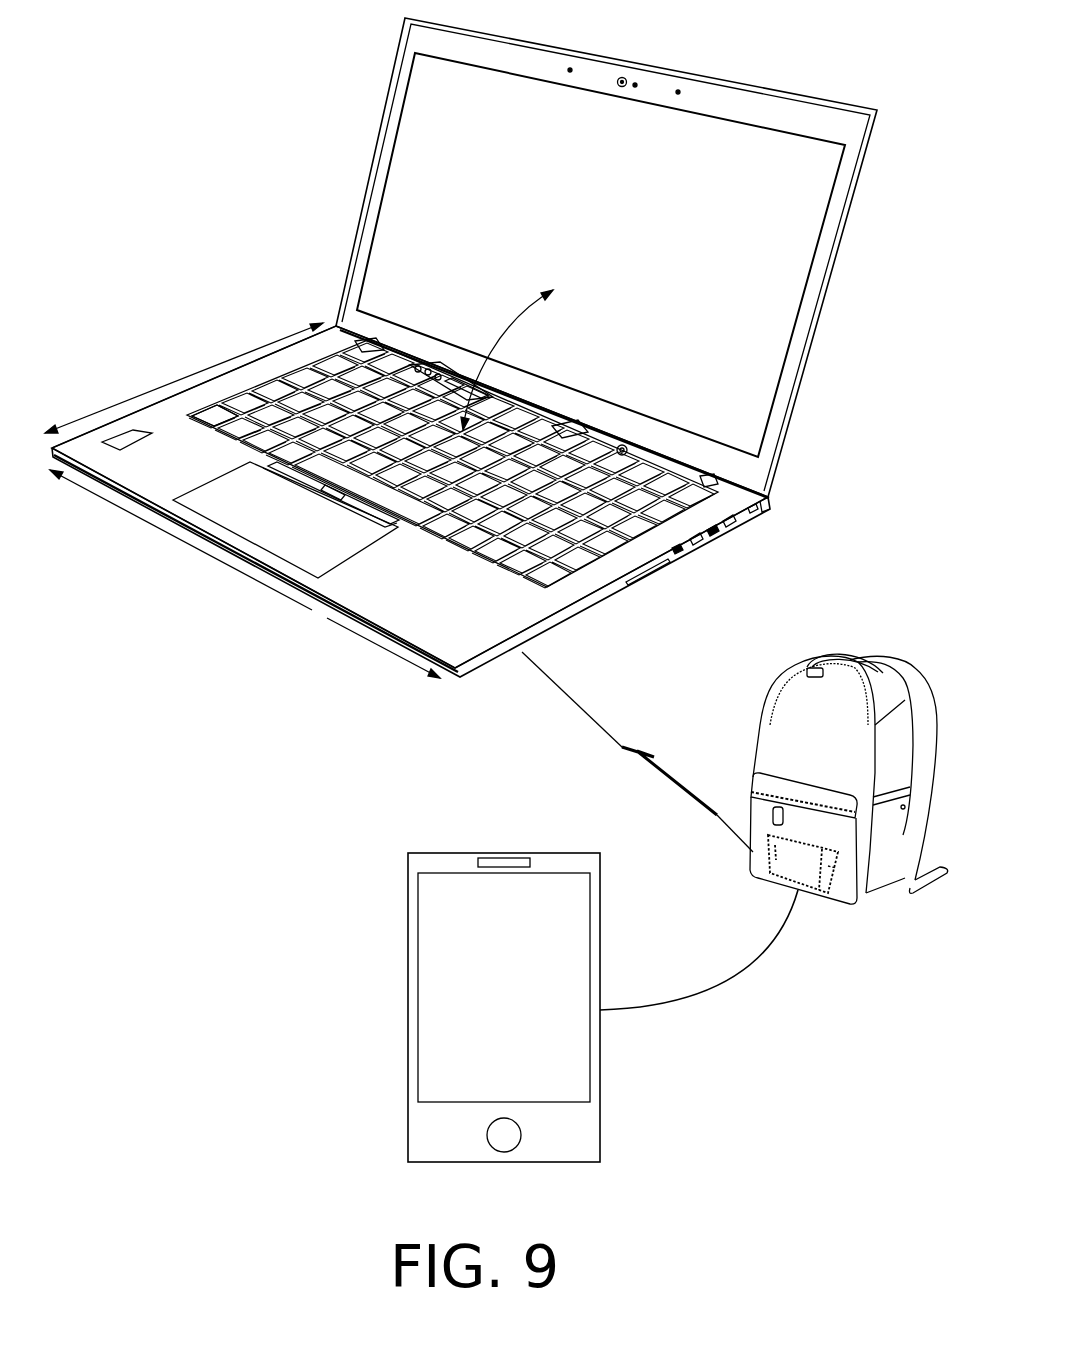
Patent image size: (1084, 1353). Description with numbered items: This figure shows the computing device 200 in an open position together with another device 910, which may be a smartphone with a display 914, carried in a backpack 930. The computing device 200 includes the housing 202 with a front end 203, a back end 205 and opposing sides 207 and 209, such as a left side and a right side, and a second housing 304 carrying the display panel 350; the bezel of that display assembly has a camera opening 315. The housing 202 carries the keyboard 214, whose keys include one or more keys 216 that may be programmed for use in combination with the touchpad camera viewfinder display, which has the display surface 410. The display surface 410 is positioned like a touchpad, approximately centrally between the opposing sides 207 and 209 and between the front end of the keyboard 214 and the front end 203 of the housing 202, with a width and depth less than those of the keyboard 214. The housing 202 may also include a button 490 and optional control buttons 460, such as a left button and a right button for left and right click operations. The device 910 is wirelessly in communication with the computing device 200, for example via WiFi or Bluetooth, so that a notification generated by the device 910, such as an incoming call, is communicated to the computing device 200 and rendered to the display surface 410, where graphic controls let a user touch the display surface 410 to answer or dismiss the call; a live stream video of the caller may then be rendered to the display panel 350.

The computing device 200 is at (334, 47).
The housing 202 is at (517, 640).
The front end 203 is at (203, 535).
The back end 205 is at (768, 499).
The side 207 is at (143, 408).
The side 209 is at (603, 593).
The keyboard 214 is at (327, 368).
The keys 216 is at (223, 412).
The housing 304 is at (800, 352).
The camera opening 315 is at (627, 77).
The display panel 350 is at (707, 219).
The display surface 410 is at (353, 562).
The control buttons 460 is at (277, 462).
The button 490 is at (120, 445).
The device 910 is at (408, 907).
The display 914 is at (445, 998).
The backpack 930 is at (873, 690).